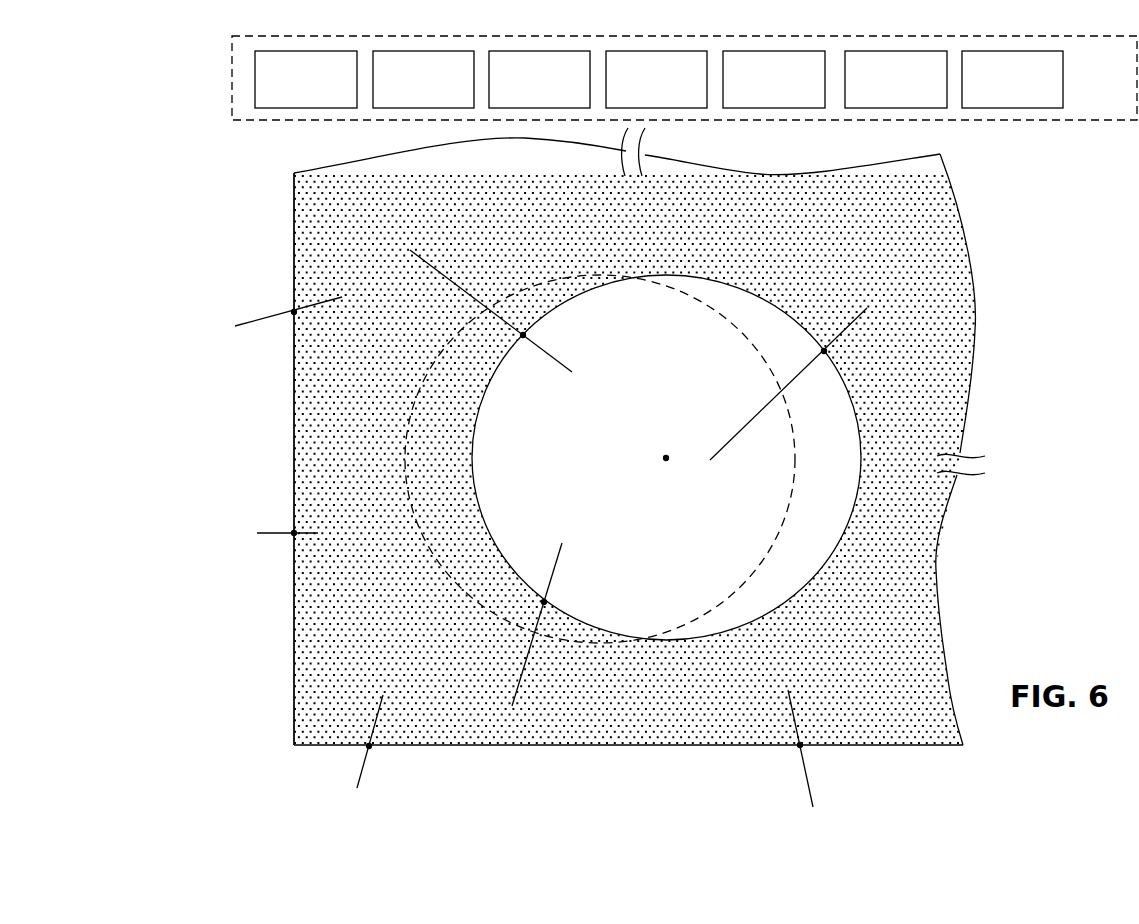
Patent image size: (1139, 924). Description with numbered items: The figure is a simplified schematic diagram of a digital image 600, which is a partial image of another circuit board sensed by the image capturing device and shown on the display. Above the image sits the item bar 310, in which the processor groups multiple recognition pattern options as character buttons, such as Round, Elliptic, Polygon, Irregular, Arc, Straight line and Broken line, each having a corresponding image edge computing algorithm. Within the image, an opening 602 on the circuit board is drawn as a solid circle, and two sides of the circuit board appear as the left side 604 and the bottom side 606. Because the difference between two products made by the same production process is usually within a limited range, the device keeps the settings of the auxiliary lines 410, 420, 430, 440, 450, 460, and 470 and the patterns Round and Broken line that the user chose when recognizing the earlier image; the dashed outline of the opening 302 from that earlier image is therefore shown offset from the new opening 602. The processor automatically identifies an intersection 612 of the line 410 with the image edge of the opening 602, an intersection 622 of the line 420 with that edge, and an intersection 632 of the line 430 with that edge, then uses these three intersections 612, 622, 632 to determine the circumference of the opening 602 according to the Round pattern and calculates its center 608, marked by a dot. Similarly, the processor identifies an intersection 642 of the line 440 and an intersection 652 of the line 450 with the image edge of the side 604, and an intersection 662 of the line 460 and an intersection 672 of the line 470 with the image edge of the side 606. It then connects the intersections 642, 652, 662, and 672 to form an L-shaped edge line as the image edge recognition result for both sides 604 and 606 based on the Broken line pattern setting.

The item bar 310 is at (232, 80).
The digital image 600 is at (262, 249).
The opening 602 is at (728, 278).
The side of the circuit board 604 is at (305, 628).
The side of the circuit board 606 is at (869, 735).
The center 608 is at (666, 458).
The opening 302 is at (545, 280).
The auxiliary line 410 is at (437, 261).
The auxiliary line 420 is at (856, 309).
The auxiliary line 430 is at (519, 679).
The auxiliary line 440 is at (252, 311).
The auxiliary line 450 is at (270, 516).
The auxiliary line 460 is at (386, 721).
The auxiliary line 470 is at (787, 692).
The intersection 612 is at (523, 335).
The intersection 622 is at (824, 351).
The intersection 632 is at (544, 602).
The intersection 642 is at (294, 312).
The intersection 652 is at (294, 530).
The intersection 662 is at (369, 746).
The intersection 672 is at (800, 745).